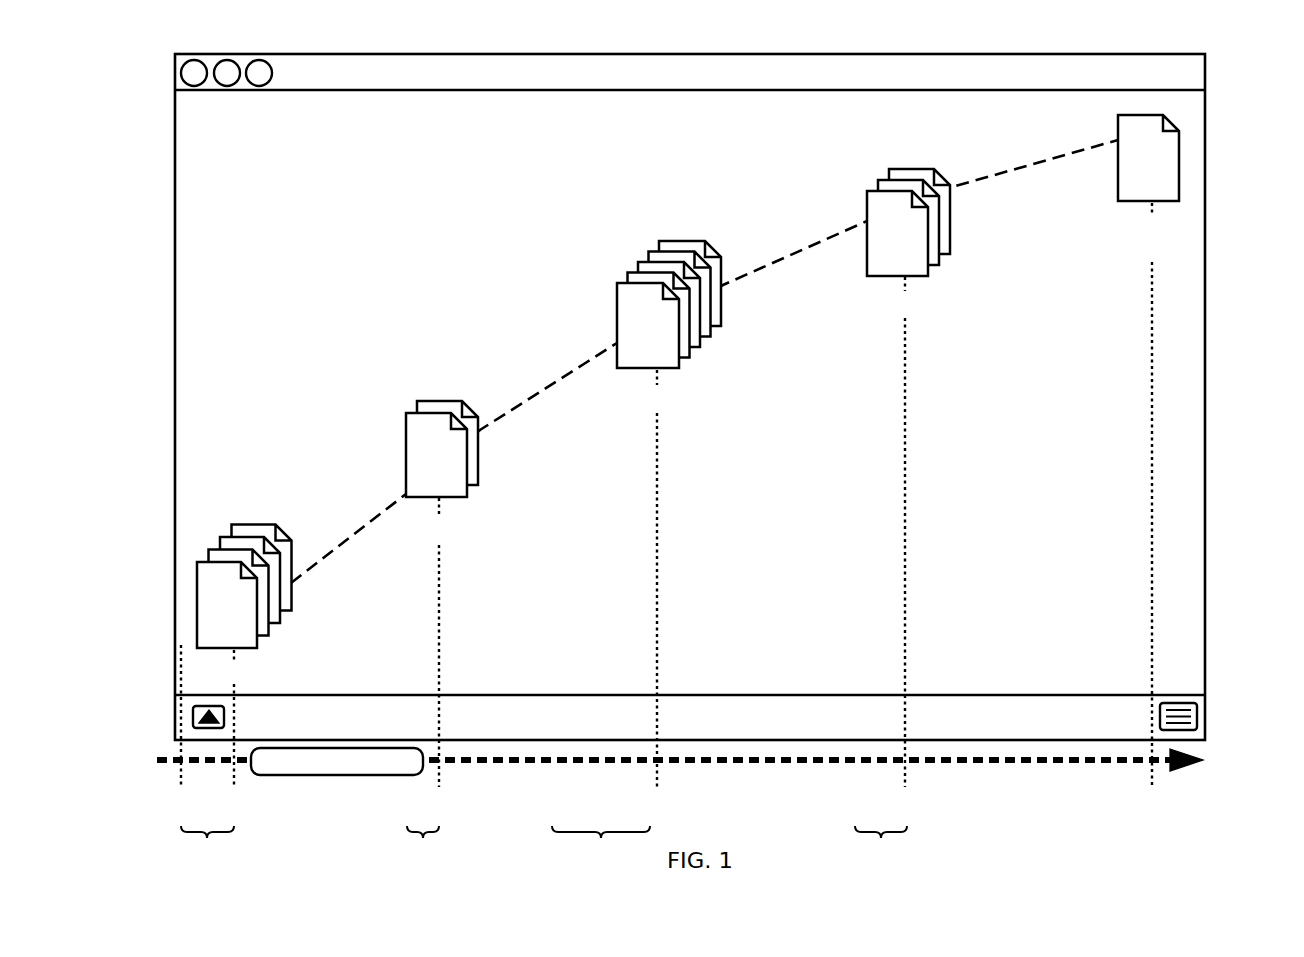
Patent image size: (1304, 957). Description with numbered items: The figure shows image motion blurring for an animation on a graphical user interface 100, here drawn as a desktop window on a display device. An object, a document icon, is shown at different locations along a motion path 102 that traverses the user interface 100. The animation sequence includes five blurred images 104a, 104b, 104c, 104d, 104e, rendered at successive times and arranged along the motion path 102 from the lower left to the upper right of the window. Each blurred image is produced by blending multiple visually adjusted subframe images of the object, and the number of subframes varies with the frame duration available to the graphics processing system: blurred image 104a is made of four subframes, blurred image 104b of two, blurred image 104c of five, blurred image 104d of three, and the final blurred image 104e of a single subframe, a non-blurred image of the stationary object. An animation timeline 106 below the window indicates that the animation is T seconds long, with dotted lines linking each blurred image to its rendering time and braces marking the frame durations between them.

The graphical user interface 100 is at (175, 55).
The motion path 102 is at (587, 362).
The blurred image 104a is at (195, 525).
The blurred image 104b is at (403, 395).
The blurred image 104c is at (617, 232).
The blurred image 104d is at (863, 157).
The blurred image 104e is at (1113, 109).
The animation timeline 106 is at (155, 748).